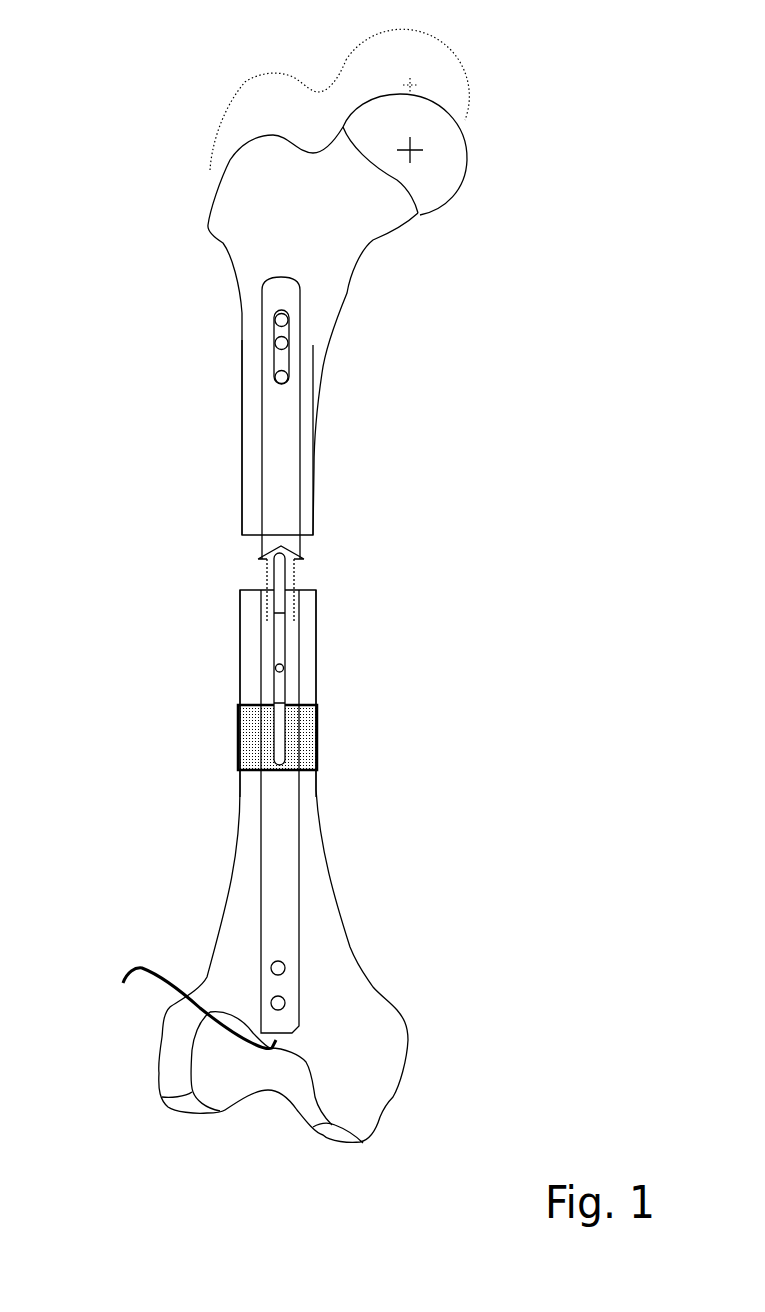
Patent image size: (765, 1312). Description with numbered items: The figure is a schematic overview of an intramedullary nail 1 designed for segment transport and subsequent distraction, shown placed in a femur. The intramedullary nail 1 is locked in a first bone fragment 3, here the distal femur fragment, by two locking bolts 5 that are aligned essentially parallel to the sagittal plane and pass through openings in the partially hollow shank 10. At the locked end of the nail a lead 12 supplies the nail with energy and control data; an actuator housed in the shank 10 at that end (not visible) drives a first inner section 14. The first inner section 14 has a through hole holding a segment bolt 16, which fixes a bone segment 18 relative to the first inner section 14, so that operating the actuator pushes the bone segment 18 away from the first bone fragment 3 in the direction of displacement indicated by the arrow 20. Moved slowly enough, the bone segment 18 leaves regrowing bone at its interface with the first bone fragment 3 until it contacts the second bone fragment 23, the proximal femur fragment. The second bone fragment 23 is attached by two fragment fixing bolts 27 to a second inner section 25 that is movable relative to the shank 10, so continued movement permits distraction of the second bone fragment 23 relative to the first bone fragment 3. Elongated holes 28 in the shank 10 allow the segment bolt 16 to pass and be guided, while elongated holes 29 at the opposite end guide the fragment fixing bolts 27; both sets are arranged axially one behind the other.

The intramedullary nail 1 is at (212, 552).
The first bone fragment 3 is at (220, 927).
The locking bolts 5 is at (285, 968).
The shank 10 is at (282, 418).
The lead 12 is at (140, 968).
The first inner section 14 is at (320, 659).
The segment bolt 16 is at (284, 670).
The bone segment 18 is at (239, 685).
The arrow 20 is at (293, 568).
The second bone fragment 23 is at (242, 357).
The second inner section 25 is at (286, 327).
The fragment fixing bolts 27 is at (288, 343).
The elongated holes 28 is at (287, 732).
The elongated holes 29 is at (290, 355).